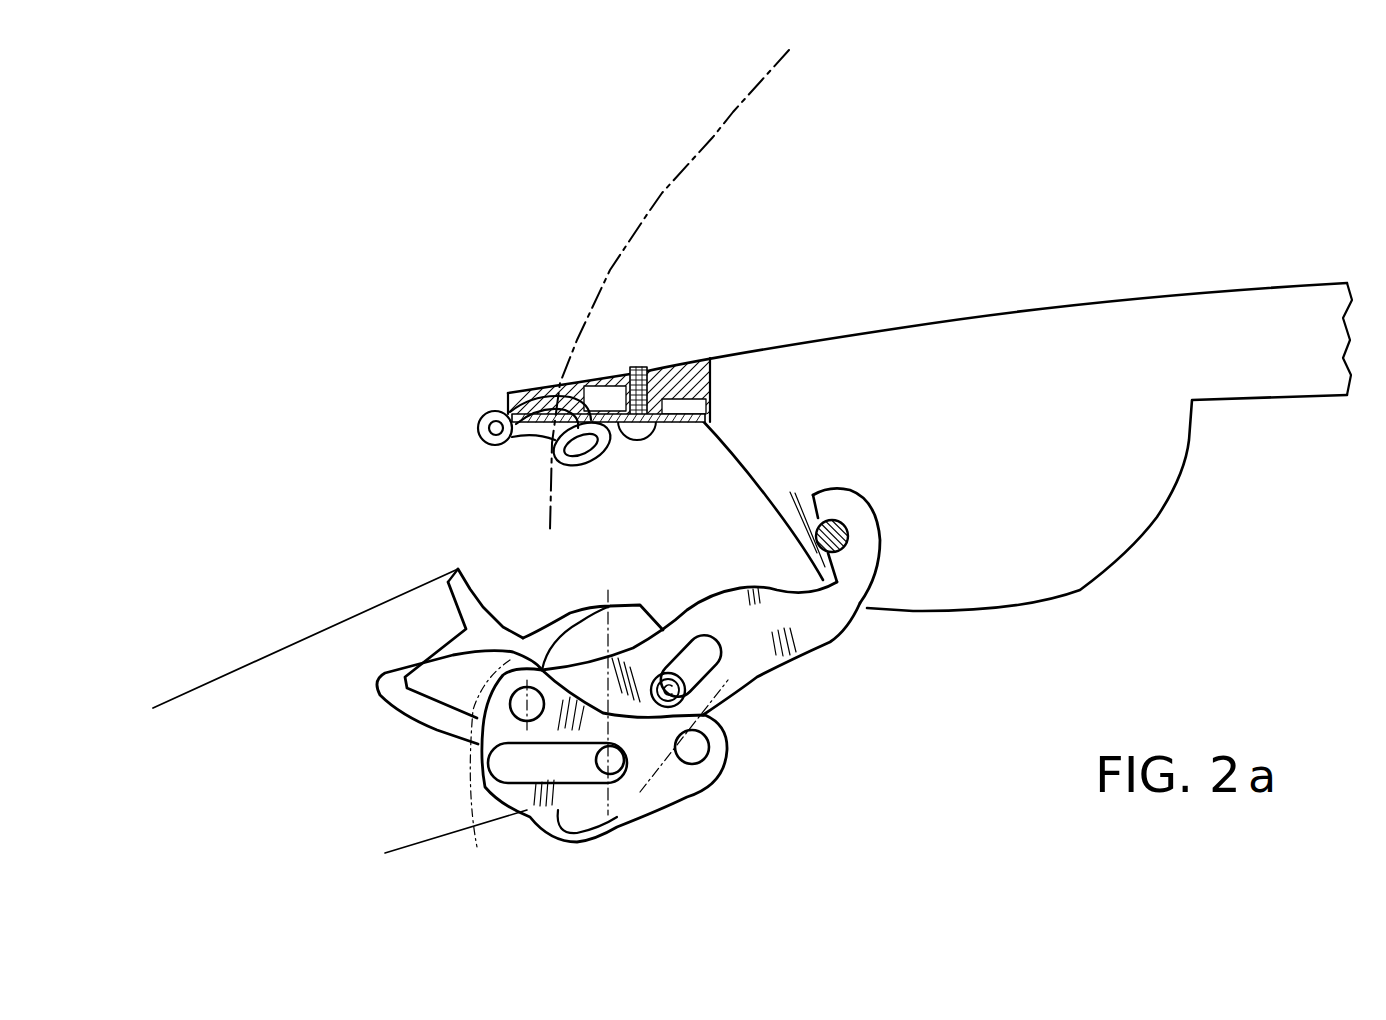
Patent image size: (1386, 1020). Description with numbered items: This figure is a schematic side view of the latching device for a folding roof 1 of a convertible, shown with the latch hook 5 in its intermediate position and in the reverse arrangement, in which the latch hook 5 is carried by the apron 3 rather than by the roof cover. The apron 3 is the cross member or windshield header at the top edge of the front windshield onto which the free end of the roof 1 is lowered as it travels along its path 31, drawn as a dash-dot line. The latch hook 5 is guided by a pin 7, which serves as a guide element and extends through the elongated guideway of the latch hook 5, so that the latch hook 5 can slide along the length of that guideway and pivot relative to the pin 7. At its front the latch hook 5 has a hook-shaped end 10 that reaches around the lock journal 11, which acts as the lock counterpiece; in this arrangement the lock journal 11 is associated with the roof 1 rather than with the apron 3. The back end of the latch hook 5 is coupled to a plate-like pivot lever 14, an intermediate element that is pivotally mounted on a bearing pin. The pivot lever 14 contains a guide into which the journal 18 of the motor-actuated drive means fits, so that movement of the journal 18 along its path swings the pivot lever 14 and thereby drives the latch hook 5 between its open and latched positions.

The folding roof 1 is at (1161, 293).
The apron 3 is at (347, 634).
The latch hook 5 is at (834, 651).
The pin 7 is at (723, 684).
The front hook-shaped end 10 is at (840, 507).
The lock journal 11 is at (818, 518).
The pivot lever 14 is at (492, 804).
The journal 18 is at (613, 772).
The path 31 is at (658, 203).